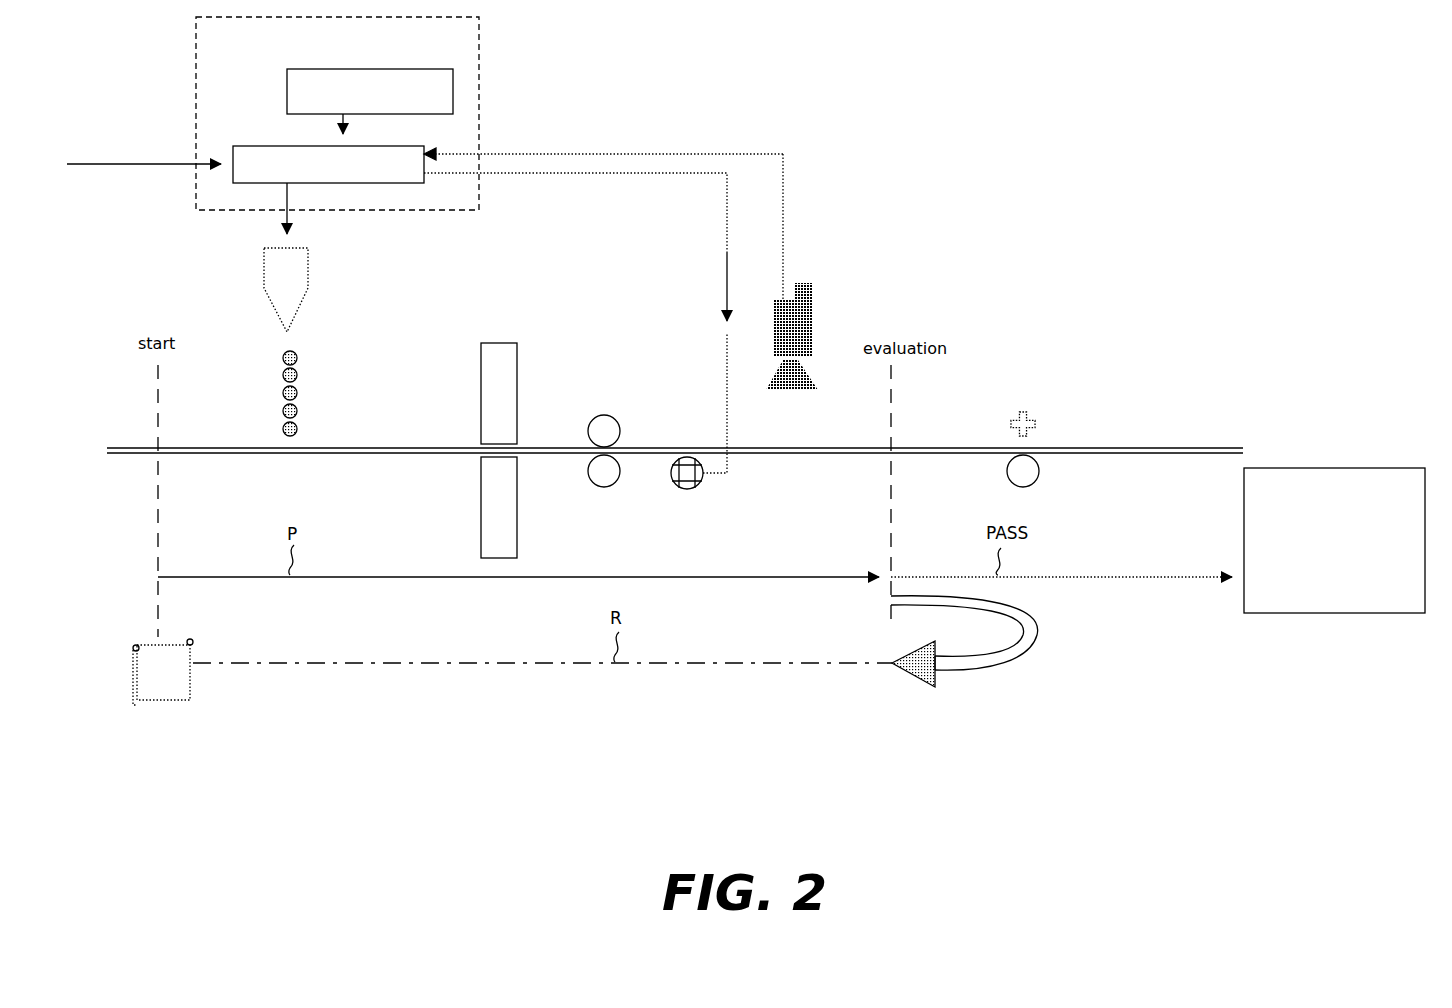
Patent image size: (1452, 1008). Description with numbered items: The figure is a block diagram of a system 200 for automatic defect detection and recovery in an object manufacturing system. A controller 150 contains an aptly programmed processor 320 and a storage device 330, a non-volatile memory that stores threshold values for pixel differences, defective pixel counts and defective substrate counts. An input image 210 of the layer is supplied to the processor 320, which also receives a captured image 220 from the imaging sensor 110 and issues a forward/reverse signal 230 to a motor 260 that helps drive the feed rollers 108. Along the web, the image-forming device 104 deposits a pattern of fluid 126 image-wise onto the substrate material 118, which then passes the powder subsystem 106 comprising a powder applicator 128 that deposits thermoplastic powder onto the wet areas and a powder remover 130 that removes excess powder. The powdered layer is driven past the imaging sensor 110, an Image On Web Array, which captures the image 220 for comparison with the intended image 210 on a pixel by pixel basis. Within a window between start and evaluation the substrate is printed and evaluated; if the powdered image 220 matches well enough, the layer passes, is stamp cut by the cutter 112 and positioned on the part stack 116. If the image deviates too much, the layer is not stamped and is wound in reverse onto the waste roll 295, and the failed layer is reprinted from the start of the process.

The system for automatic defect detection and recovery 200 is at (1083, 196).
The controller 150 is at (480, 37).
The storage device 330 is at (299, 73).
The processor 320 is at (233, 150).
The input image 210 is at (142, 165).
The captured image 220 is at (784, 242).
The forward/reverse signal 230 is at (722, 266).
The image-forming device 104 is at (306, 295).
The fluid 126 is at (292, 393).
The substrate material 118 is at (118, 447).
The powder subsystem 106 is at (448, 378).
The powder applicator 128 is at (512, 343).
The powder remover 130 is at (481, 533).
The fuser 108 is at (598, 414).
The motor 260 is at (687, 490).
The imaging sensor 110 is at (813, 316).
The cutter 112 is at (1015, 420).
The part stack 116 is at (1420, 468).
The waste roll 295 is at (130, 655).